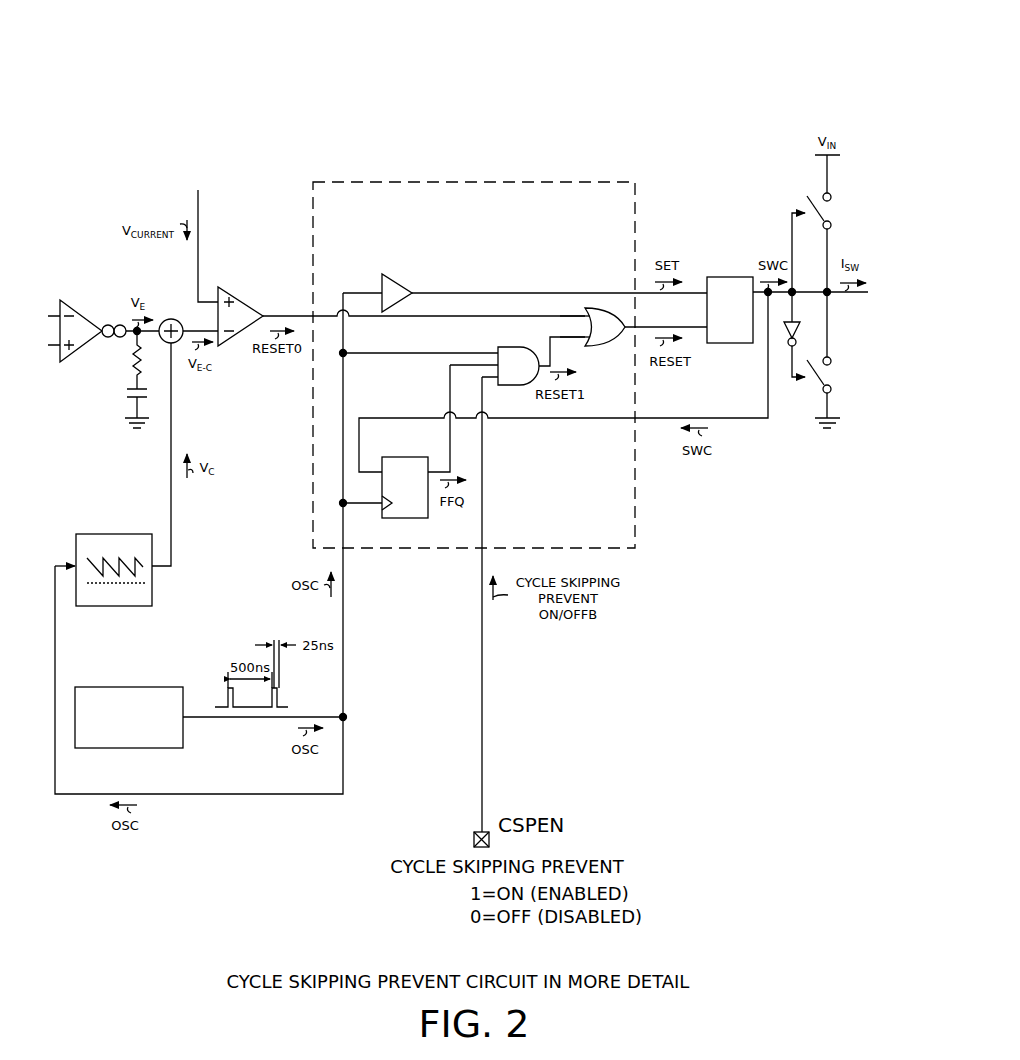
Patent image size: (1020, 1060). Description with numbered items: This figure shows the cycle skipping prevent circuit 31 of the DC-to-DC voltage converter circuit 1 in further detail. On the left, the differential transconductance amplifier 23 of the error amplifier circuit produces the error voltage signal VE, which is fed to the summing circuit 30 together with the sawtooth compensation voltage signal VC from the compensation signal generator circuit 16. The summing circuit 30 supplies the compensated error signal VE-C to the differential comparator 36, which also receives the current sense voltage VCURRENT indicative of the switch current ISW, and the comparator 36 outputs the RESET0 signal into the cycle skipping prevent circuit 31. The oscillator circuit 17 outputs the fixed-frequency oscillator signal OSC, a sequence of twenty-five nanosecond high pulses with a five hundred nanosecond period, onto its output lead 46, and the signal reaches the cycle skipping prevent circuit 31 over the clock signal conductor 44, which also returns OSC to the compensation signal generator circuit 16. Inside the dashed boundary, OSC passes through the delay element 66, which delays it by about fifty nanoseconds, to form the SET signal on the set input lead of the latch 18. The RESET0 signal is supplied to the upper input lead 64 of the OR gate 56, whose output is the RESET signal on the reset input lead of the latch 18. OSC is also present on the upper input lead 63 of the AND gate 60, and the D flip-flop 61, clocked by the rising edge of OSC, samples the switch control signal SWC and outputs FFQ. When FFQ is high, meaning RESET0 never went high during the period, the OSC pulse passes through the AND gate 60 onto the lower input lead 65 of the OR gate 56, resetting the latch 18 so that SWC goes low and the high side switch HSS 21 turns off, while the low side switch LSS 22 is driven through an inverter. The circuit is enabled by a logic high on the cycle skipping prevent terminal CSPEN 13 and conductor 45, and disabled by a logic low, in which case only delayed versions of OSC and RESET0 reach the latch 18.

The DC-to-DC voltage converter circuit 1 is at (661, 76).
The cycle skipping prevent terminal CSPEN 13 is at (474, 839).
The compensation signal generator circuit 16 is at (115, 534).
The oscillator circuit 17 is at (126, 687).
The latch 18 is at (727, 277).
The high side switch HSS 21 is at (839, 216).
The low side switch LSS 22 is at (838, 377).
The differential transconductance amplifier 23 is at (82, 308).
The summing circuit 30 is at (168, 318).
The cycle skipping prevent circuit 31 is at (482, 182).
The differential comparator 36 is at (235, 296).
The clock signal conductor 44 is at (345, 618).
The conductor 45 is at (482, 767).
The output lead 46 is at (188, 720).
The OR gate 56 is at (605, 327).
The AND gate 60 is at (518, 366).
The D flip-flop 61 is at (402, 457).
The upper input lead of AND gate 63 is at (495, 350).
The upper input lead of OR gate 64 is at (583, 314).
The lower input lead of OR gate 65 is at (584, 339).
The delay element 66 is at (398, 273).